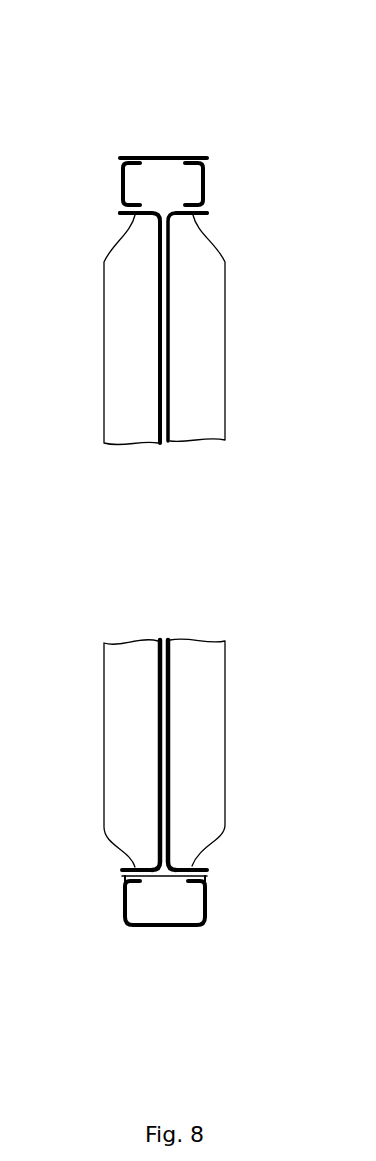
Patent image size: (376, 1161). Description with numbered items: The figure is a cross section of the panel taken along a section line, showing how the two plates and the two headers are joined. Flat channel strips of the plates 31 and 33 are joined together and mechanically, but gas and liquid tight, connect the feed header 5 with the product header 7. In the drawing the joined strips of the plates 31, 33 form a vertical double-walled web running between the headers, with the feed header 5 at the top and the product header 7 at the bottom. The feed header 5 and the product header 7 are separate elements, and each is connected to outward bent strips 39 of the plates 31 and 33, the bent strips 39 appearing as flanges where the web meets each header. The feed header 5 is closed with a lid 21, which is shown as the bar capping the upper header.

The lid 21 is at (142, 155).
The feed header 5 is at (178, 178).
The outward bent strips 39 is at (200, 216).
The plate 33 is at (170, 336).
The plate 31 is at (158, 372).
The product header 7 is at (168, 905).